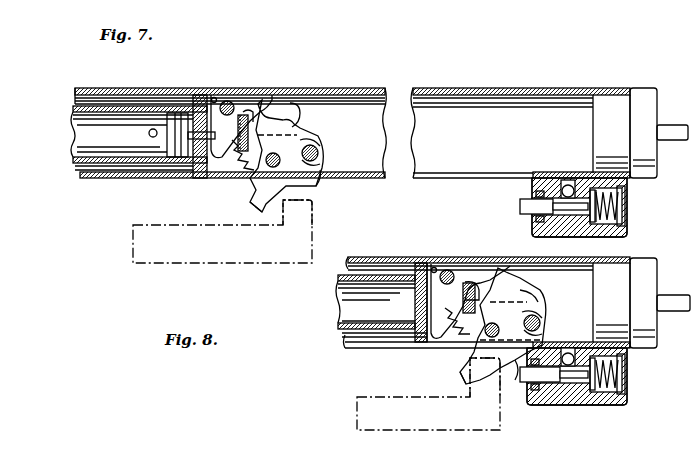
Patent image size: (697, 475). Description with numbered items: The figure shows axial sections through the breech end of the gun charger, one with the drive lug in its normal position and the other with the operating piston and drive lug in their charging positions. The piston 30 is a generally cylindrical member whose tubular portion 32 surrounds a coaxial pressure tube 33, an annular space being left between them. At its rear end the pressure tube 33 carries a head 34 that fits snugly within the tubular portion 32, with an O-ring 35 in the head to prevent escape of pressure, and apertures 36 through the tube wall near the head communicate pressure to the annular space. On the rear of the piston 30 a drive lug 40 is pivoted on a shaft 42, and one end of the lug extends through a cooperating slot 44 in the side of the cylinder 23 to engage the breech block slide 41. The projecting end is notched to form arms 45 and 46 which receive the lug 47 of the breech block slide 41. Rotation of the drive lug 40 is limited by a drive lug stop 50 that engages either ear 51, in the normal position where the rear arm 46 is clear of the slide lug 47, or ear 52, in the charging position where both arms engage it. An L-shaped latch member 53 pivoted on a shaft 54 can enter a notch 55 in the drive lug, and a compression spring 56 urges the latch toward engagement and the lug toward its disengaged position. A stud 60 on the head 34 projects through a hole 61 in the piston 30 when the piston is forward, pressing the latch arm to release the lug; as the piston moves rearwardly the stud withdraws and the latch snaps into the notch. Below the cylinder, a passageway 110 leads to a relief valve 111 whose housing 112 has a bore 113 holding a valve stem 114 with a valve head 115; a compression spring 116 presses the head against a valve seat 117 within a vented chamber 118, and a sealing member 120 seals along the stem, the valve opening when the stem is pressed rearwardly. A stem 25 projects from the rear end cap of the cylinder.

In FIG. 7, the cylinder 23 is at (103, 180).
In FIG. 8, the cylinder 23 is at (346, 352).
In FIG. 7, the stem pin 25 is at (673, 126).
In FIG. 7, the piston 30 is at (216, 97).
In FIG. 8, the piston 30 is at (430, 267).
In FIG. 7, the tubular portion 32 is at (86, 112).
In FIG. 8, the tubular portion 32 is at (338, 298).
In FIG. 7, the pressure tube 33 is at (119, 112).
In FIG. 7, the head 34 is at (170, 112).
In FIG. 7, the O-ring 35 is at (169, 158).
In FIG. 7, the apertures 36 is at (151, 138).
In FIG. 7, the drive lug 40 is at (300, 105).
In FIG. 8, the drive lug 40 is at (522, 283).
In FIG. 7, the breech block slide 41 is at (230, 255).
In FIG. 8, the breech block slide 41 is at (366, 408).
In FIG. 7, the shaft 42 is at (281, 155).
In FIG. 8, the shaft 42 is at (494, 324).
In FIG. 7, the cooperating slot 44 is at (478, 179).
In FIG. 7, the arm 45 is at (257, 207).
In FIG. 8, the arm 45 is at (465, 375).
In FIG. 7, the arm 46 is at (320, 186).
In FIG. 8, the arm 46 is at (515, 382).
In FIG. 7, the lug 47 is at (303, 237).
In FIG. 8, the lug 47 is at (488, 390).
In FIG. 7, the drive lug stop 50 is at (322, 145).
In FIG. 8, the drive lug stop 50 is at (544, 315).
In FIG. 7, the ear 51 is at (330, 160).
In FIG. 8, the ear 51 is at (545, 327).
In FIG. 7, the ear 52 is at (298, 119).
In FIG. 8, the ear 52 is at (542, 300).
In FIG. 7, the latch member 53 is at (258, 97).
In FIG. 8, the latch member 53 is at (500, 267).
In FIG. 7, the shaft 54 is at (231, 102).
In FIG. 8, the shaft 54 is at (449, 270).
In FIG. 7, the notch 55 is at (288, 101).
In FIG. 8, the notch 55 is at (496, 270).
In FIG. 7, the compression spring 56 is at (240, 168).
In FIG. 8, the compression spring 56 is at (451, 326).
In FIG. 7, the stud 60 is at (197, 150).
In FIG. 7, the hole 61 is at (210, 97).
In FIG. 8, the hole 61 is at (414, 304).
In FIG. 7, the passageway 110 is at (540, 180).
In FIG. 8, the passageway 110 is at (627, 347).
In FIG. 7, the relief valve 111 is at (580, 218).
In FIG. 8, the relief valve 111 is at (598, 394).
In FIG. 7, the housing 112 is at (625, 234).
In FIG. 8, the housing 112 is at (598, 406).
In FIG. 7, the bore 113 is at (567, 200).
In FIG. 7, the valve stem 114 is at (520, 205).
In FIG. 7, the valve head 115 is at (612, 196).
In FIG. 7, the compression spring 116 is at (615, 210).
In FIG. 7, the valve seat 117 is at (590, 222).
In FIG. 7, the chamber 118 is at (612, 222).
In FIG. 7, the sealing member 120 is at (536, 218).